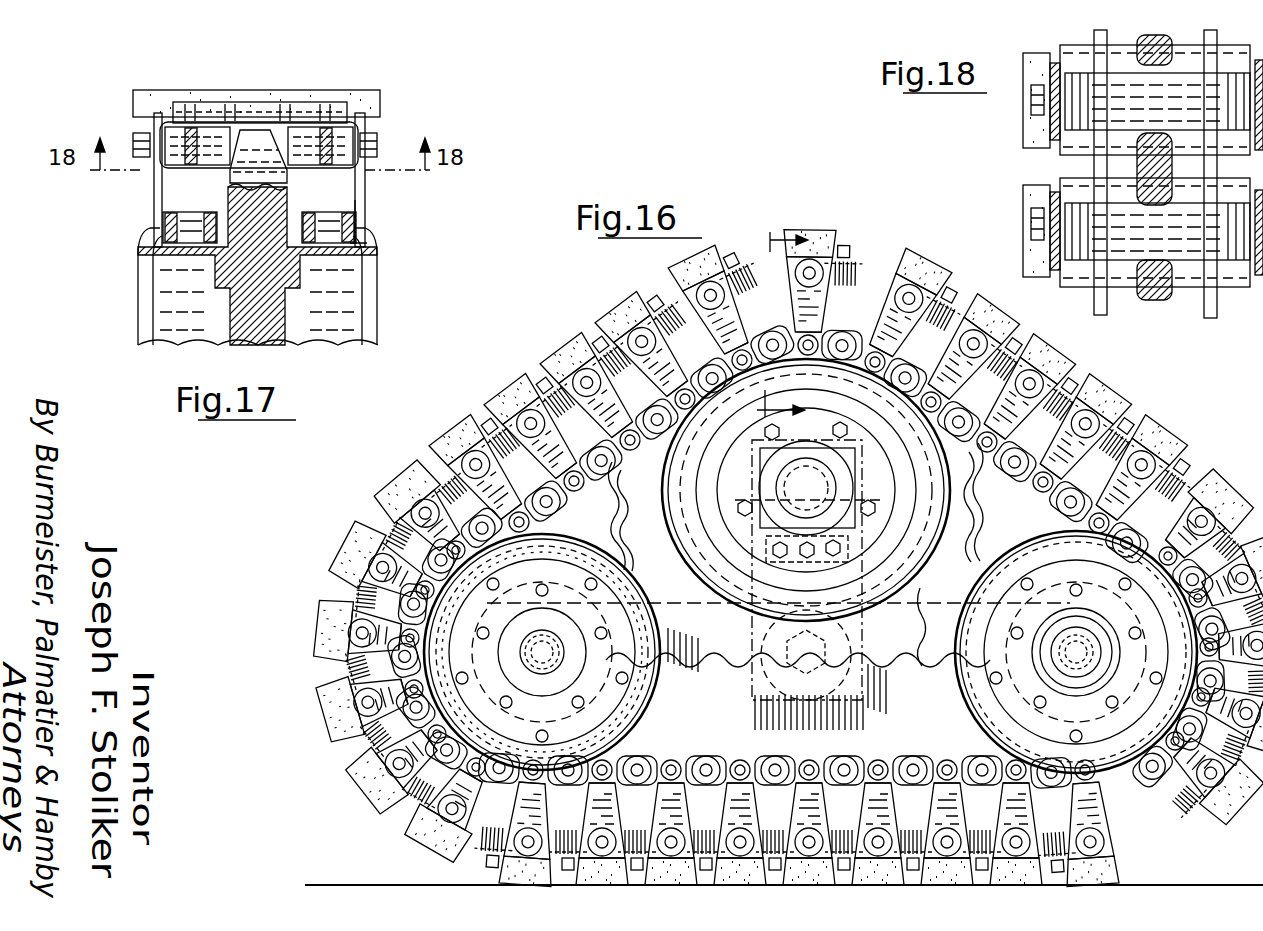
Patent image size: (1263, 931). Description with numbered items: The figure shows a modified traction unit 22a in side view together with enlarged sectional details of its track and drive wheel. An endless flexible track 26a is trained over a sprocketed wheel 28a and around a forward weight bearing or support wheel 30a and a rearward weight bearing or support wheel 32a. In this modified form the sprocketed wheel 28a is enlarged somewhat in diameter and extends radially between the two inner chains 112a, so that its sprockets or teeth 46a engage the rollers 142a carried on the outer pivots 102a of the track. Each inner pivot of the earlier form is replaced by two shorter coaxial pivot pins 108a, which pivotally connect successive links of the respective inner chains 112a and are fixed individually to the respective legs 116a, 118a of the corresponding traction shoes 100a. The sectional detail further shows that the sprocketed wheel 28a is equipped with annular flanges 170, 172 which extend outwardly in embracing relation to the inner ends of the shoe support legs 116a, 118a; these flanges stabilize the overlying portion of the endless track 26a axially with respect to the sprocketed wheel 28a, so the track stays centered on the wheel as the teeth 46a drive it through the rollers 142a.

In FIG. 16, the traction unit 22a is at (1197, 444).
In FIG. 16, the endless track 26a is at (354, 530).
In FIG. 17, the endless track 26a is at (388, 94).
In FIG. 18, the endless track 26a is at (1020, 201).
In FIG. 16, the sprocketed wheel 28a is at (778, 578).
In FIG. 17, the sprocketed wheel 28a is at (320, 338).
In FIG. 16, the forward support wheel 30a is at (600, 697).
In FIG. 16, the rearward support wheel 32a is at (1013, 695).
In FIG. 16, the sprockets or teeth 46a is at (848, 246).
In FIG. 17, the sprockets or teeth 46a is at (258, 140).
In FIG. 18, the sprockets or teeth 46a is at (1155, 186).
In FIG. 16, the traction shoe 100a is at (1062, 372).
In FIG. 17, the outer pivot 102a is at (140, 150).
In FIG. 18, the outer pivot 102a is at (1036, 108).
In FIG. 16, the inner pivot pin 108a is at (542, 652).
In FIG. 17, the inner pivot pin 108a is at (218, 215).
In FIG. 16, the inner chain 112a is at (1064, 522).
In FIG. 17, the inner chain 112a is at (163, 215).
In FIG. 17, the shoe support leg 116a is at (163, 185).
In FIG. 17, the shoe support leg 118a is at (372, 222).
In FIG. 17, the roller 142a is at (238, 128).
In FIG. 17, the annular flange 170 is at (142, 232).
In FIG. 17, the annular flange 172 is at (377, 236).